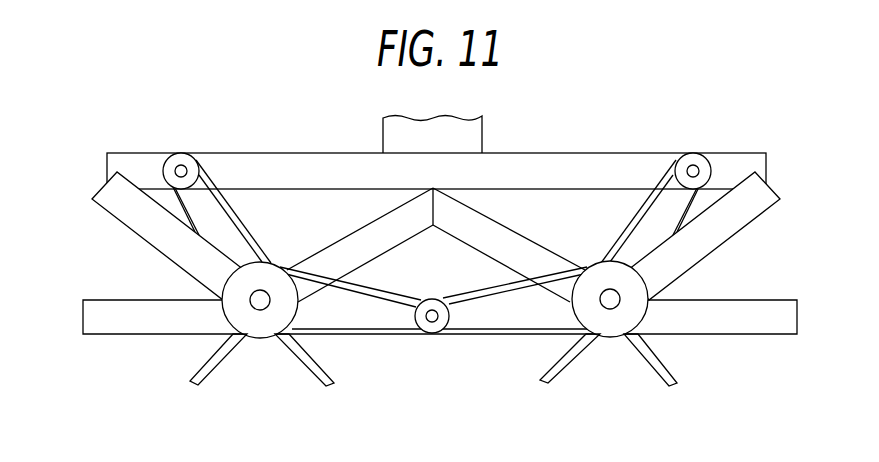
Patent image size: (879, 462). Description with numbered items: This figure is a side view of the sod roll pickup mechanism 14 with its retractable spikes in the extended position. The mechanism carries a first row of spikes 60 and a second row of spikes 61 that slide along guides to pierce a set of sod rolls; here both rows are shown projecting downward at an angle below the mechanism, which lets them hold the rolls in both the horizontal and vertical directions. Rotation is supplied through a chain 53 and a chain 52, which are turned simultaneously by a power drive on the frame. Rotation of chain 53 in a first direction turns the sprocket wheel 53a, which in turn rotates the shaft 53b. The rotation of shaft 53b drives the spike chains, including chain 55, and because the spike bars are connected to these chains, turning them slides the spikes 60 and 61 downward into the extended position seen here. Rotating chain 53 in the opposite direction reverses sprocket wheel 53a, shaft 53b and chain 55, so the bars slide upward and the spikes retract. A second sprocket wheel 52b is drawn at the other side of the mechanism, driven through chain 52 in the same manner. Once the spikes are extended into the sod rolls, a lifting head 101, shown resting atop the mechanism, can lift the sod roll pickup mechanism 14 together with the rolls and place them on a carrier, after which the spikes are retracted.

The sod roll pickup mechanism 14 is at (668, 120).
The lifting head 101 is at (468, 133).
The chain 55 is at (238, 212).
The second row of spikes 61 is at (213, 360).
The sprocket wheel 53a is at (253, 323).
The shaft 53b is at (262, 305).
The first row of spikes 60 is at (307, 372).
The chain 53 is at (325, 335).
The chain 52 is at (543, 337).
The pulley 52b is at (612, 302).